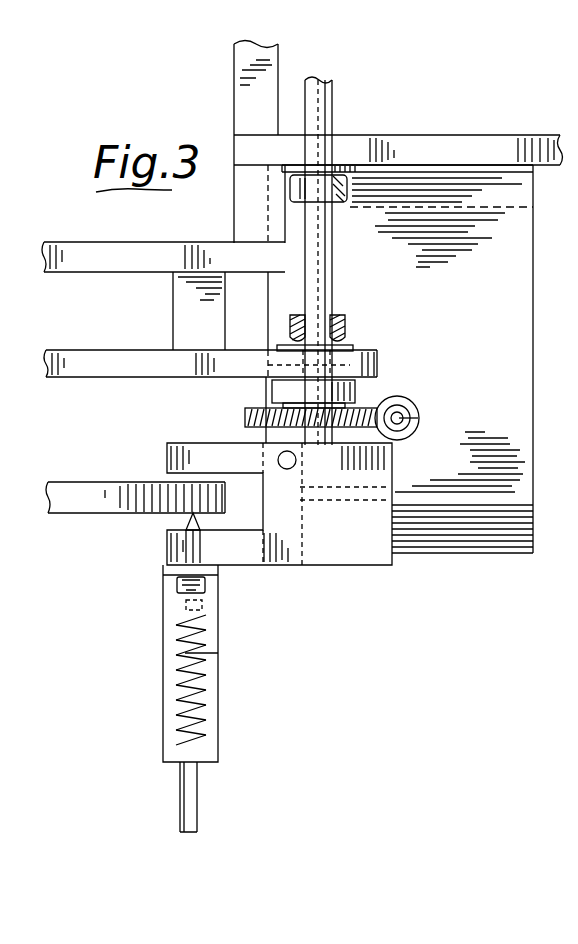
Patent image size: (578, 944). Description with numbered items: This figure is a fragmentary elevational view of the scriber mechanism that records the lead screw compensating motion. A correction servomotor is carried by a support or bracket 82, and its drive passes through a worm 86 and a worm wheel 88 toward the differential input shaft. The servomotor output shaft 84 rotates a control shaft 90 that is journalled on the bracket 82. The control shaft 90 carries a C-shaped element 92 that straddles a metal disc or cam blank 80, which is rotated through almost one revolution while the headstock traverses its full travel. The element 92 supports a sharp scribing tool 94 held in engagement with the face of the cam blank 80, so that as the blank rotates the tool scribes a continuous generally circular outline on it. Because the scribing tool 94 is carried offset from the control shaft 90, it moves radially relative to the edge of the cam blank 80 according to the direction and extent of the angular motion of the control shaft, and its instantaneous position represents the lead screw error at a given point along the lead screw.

The cam blank 80 is at (80, 500).
The support 82 is at (519, 421).
The servomotor output shaft 84 is at (405, 412).
The worm 86 is at (410, 432).
The worm wheel 88 is at (244, 414).
The control shaft 90 is at (333, 286).
The C-shaped element 92 is at (300, 568).
The scribing tool 94 is at (185, 518).